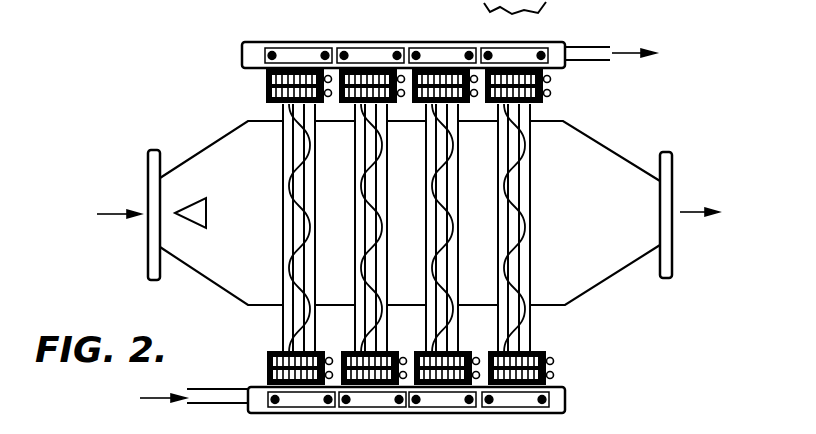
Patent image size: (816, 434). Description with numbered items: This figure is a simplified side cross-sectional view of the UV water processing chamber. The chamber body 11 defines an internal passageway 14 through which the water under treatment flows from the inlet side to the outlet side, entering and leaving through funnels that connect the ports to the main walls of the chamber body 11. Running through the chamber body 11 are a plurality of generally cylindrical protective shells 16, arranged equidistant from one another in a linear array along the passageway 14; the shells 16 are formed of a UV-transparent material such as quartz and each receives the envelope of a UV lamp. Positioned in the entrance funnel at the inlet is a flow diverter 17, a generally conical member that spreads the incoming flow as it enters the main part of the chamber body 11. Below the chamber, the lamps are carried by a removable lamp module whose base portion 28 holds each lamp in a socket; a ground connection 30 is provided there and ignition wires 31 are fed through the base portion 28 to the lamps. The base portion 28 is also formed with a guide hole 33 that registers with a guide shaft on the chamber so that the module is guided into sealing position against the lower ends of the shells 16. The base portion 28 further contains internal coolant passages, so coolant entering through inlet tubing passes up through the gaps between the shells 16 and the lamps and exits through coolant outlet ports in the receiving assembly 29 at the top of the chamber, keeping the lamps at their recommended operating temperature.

The chamber body 11 is at (557, 308).
The internal passageway 14 is at (601, 201).
The protective shells 16 is at (283, 157).
The flow diverter 17 is at (203, 197).
The base portion 28 is at (567, 395).
The receiving assembly 29 is at (557, 68).
The ground connection 30 is at (222, 404).
The ignition wires 31 is at (290, 238).
The guide hole 33 is at (591, 60).